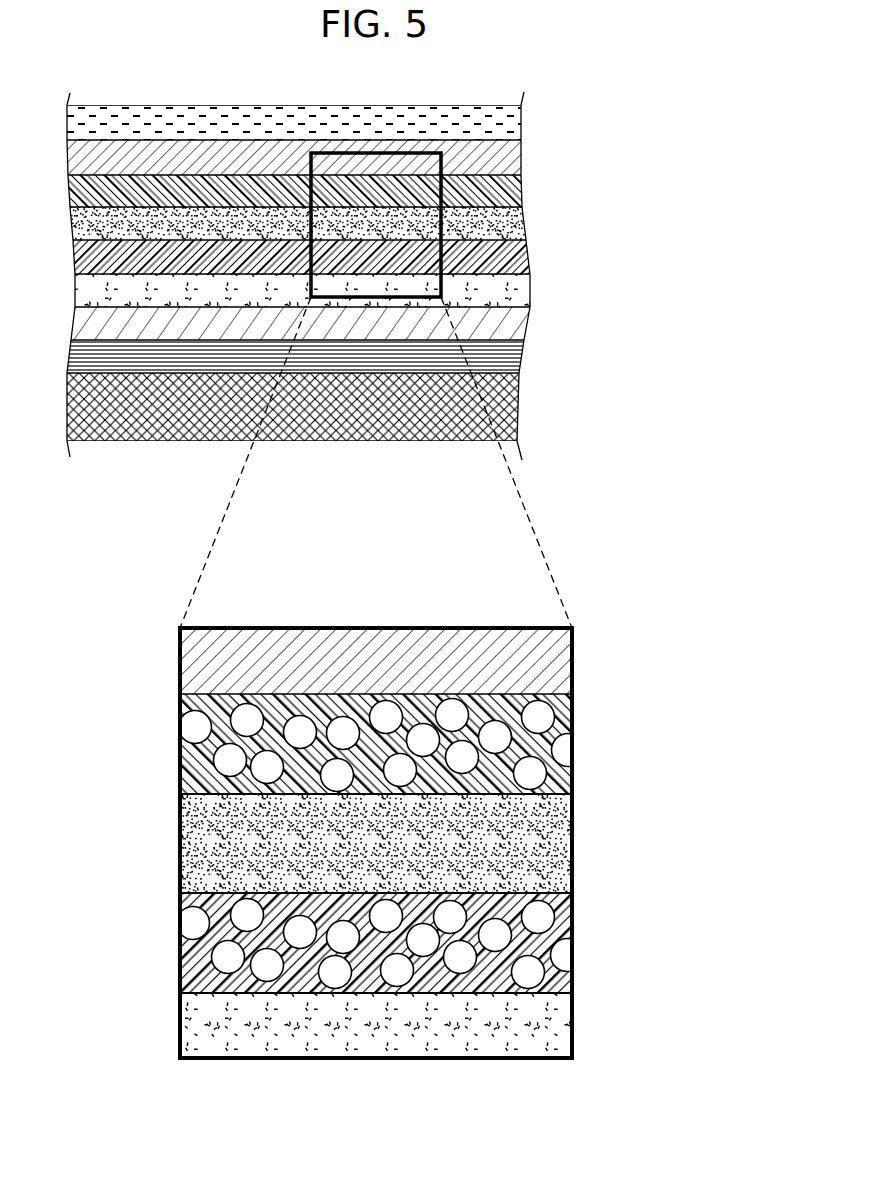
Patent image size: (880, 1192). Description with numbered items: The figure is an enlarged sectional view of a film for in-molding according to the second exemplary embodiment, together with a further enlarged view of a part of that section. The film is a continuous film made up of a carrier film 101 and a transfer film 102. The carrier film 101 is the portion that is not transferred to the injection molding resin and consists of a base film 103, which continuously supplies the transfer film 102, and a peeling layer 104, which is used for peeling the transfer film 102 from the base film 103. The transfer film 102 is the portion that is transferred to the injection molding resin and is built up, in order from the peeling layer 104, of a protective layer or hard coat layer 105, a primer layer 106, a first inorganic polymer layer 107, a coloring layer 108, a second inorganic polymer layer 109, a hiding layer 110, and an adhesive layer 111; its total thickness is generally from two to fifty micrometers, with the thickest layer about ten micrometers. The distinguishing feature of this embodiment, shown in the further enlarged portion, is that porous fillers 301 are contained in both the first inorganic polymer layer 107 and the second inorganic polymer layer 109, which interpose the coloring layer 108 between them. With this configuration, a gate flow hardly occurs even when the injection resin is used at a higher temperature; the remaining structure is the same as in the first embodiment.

The carrier film 101 is at (405, 390).
The transfer film 102 is at (405, 580).
The base film 103 is at (518, 402).
The peeling layer 104 is at (520, 357).
The protective layer or hard coat layer 105 is at (360, 323).
The primer layer 106 is at (525, 292).
The first inorganic polymer layer 107 is at (521, 255).
The coloring layer 108 is at (521, 223).
The second inorganic polymer layer 109 is at (521, 192).
The hiding layer 110 is at (521, 155).
The adhesive layer 111 is at (521, 123).
The porous fillers 301 is at (300, 730).